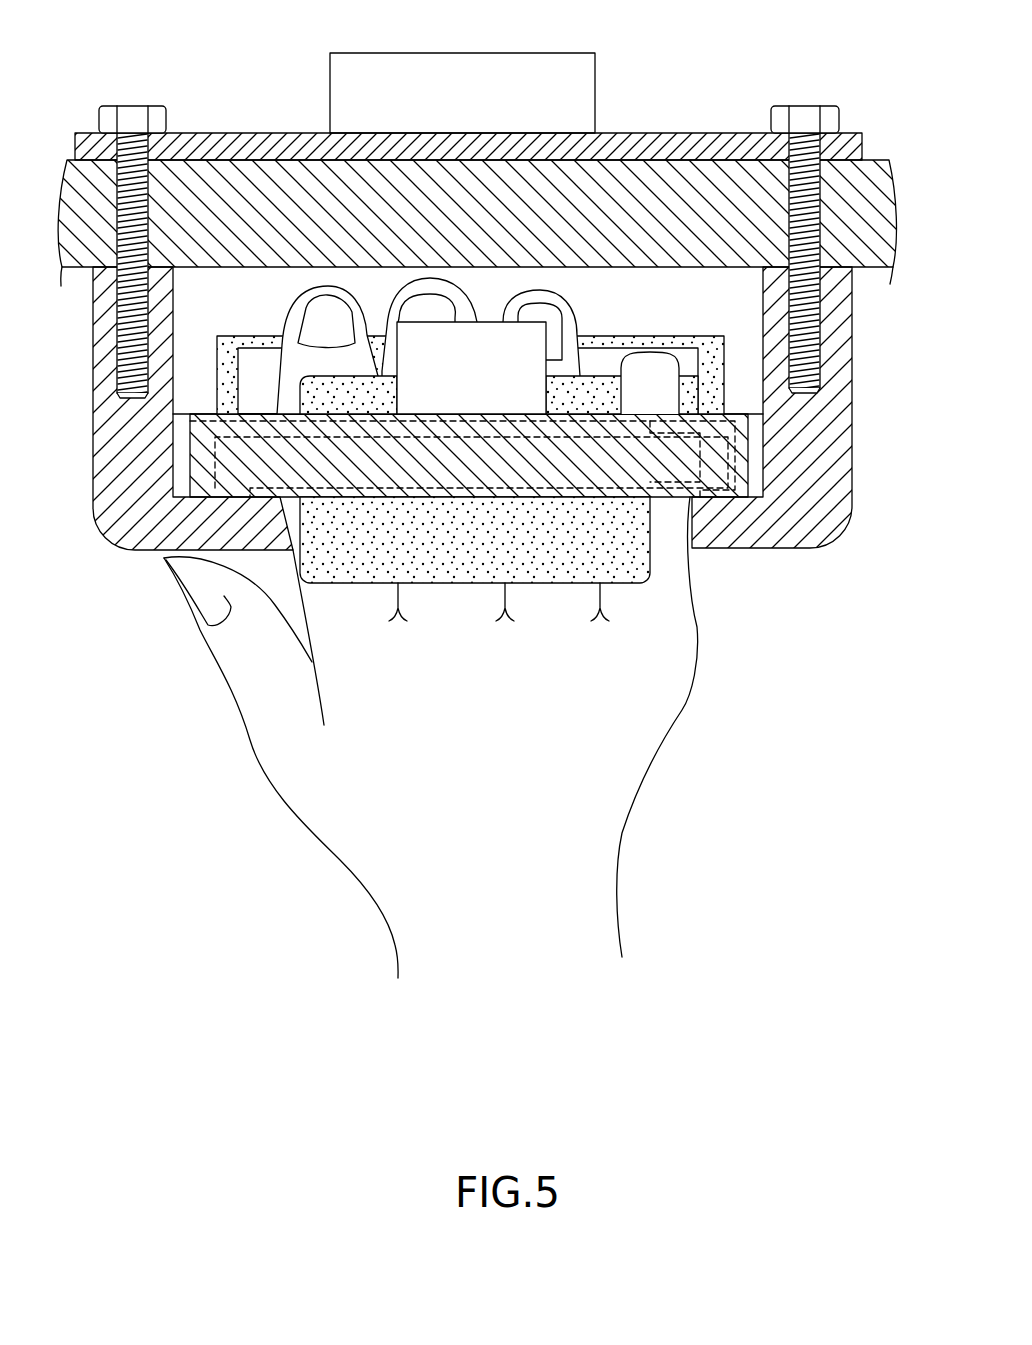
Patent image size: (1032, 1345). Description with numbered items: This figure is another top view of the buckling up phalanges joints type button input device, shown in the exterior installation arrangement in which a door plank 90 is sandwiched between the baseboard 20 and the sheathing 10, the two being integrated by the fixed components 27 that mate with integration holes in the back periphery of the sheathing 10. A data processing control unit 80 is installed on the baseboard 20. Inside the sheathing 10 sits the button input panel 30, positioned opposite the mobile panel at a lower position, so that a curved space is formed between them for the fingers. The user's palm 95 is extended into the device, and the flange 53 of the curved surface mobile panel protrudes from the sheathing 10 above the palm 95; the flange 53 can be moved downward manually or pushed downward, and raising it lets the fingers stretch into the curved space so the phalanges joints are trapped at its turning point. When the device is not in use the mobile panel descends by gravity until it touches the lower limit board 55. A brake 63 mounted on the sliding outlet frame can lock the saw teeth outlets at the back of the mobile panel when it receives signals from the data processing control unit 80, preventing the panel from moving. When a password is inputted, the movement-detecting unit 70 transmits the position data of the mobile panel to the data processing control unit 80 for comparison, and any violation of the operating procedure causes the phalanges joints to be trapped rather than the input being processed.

The sheathing 10 is at (812, 532).
The baseboard 20 is at (641, 138).
The fixed component 27 is at (803, 113).
The button input panel 30 is at (222, 373).
The flange 53 is at (625, 570).
The lower limit board 55 is at (655, 458).
The brake 63 is at (430, 343).
The movement-detecting unit 70 is at (665, 375).
The data processing control unit 80 is at (459, 58).
The door plank 90 is at (102, 183).
The palm 95 is at (540, 675).